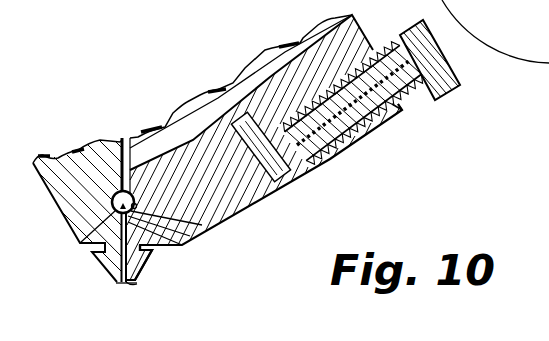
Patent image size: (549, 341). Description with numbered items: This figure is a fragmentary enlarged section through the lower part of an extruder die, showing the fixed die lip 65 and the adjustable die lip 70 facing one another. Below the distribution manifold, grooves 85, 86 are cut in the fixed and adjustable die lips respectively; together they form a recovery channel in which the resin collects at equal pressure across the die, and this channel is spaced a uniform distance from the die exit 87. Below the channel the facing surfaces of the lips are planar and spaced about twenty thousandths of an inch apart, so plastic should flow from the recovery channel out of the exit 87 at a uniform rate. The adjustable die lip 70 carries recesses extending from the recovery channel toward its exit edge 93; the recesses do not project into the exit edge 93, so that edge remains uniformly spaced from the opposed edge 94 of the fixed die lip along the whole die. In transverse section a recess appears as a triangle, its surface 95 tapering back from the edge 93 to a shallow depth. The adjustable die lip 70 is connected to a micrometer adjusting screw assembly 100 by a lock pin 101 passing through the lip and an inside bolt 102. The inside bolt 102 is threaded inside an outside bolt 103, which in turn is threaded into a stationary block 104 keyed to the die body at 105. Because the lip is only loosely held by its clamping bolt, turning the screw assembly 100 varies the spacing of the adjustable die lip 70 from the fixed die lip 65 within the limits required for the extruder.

The fixed die lip 65 is at (63, 190).
The adjustable die lip 70 is at (148, 265).
The groove 85 is at (118, 222).
The groove 86 is at (187, 240).
The die exit 87 is at (118, 284).
The exit edge 93 is at (135, 282).
The opposed edge 94 is at (450, 14).
The surface 95 is at (187, 248).
The micrometer adjusting screw assembly 100 is at (373, 142).
The lock pin 101 is at (283, 193).
The inside bolt 102 is at (315, 177).
The outside bolt 103 is at (441, 89).
The stationary block 104 is at (403, 111).
The key 105 is at (306, 62).